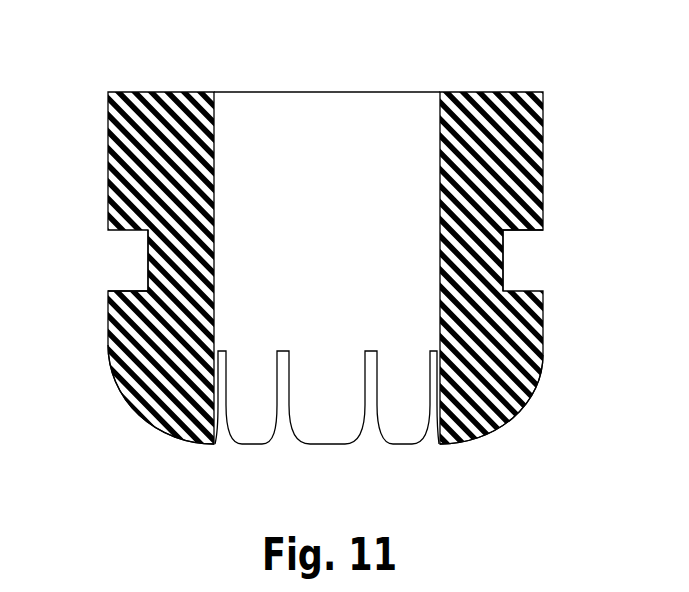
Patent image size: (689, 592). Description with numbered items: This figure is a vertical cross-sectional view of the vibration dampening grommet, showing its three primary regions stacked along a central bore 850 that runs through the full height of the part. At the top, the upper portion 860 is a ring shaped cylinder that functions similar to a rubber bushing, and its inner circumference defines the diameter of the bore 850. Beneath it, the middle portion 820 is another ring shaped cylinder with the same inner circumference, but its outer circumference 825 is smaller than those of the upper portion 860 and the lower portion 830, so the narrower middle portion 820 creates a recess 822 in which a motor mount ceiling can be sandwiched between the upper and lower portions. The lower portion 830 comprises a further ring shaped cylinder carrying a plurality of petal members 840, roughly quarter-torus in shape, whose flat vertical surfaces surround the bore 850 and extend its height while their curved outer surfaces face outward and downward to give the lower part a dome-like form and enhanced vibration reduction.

The middle portion 820 is at (128, 232).
The recess 822 is at (140, 267).
The outer circumference 825 is at (138, 250).
The lower portion 830 is at (366, 405).
The petal members 840 is at (513, 417).
The bore 850 is at (327, 165).
The upper portion 860 is at (545, 162).